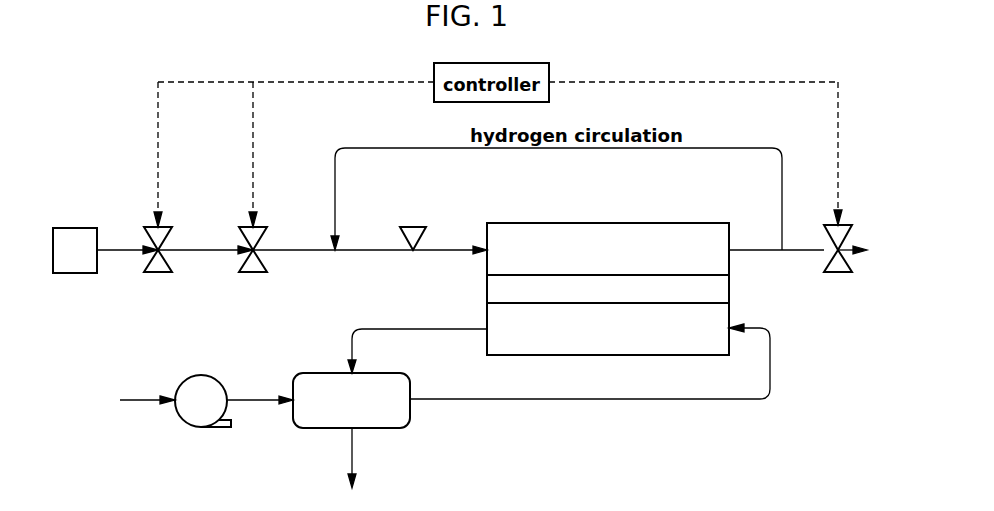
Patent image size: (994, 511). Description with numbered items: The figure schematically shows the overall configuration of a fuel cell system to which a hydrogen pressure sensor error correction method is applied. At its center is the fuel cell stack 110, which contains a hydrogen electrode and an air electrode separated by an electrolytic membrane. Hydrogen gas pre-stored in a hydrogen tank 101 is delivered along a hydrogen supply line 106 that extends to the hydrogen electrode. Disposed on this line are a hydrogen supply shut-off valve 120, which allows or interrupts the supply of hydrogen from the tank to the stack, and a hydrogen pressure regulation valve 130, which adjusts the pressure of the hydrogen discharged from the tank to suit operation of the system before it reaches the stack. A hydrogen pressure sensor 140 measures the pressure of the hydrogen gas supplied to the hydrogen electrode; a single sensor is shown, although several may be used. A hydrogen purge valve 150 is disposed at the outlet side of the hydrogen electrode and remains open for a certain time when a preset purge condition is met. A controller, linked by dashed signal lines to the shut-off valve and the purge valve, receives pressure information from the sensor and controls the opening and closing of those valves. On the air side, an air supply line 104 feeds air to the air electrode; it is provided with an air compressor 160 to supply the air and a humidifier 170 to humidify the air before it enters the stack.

The hydrogen tank 101 is at (72, 273).
The hydrogen supply shut-off valve 120 is at (155, 225).
The hydrogen pressure regulation valve 130 is at (250, 225).
The hydrogen pressure sensor 140 is at (413, 226).
The fuel cell stack 110 is at (648, 223).
The hydrogen supply line 106 is at (755, 250).
The hydrogen purge valve 150 is at (840, 224).
The air compressor 160 is at (190, 428).
The humidifier 170 is at (412, 415).
The air supply line 104 is at (655, 400).